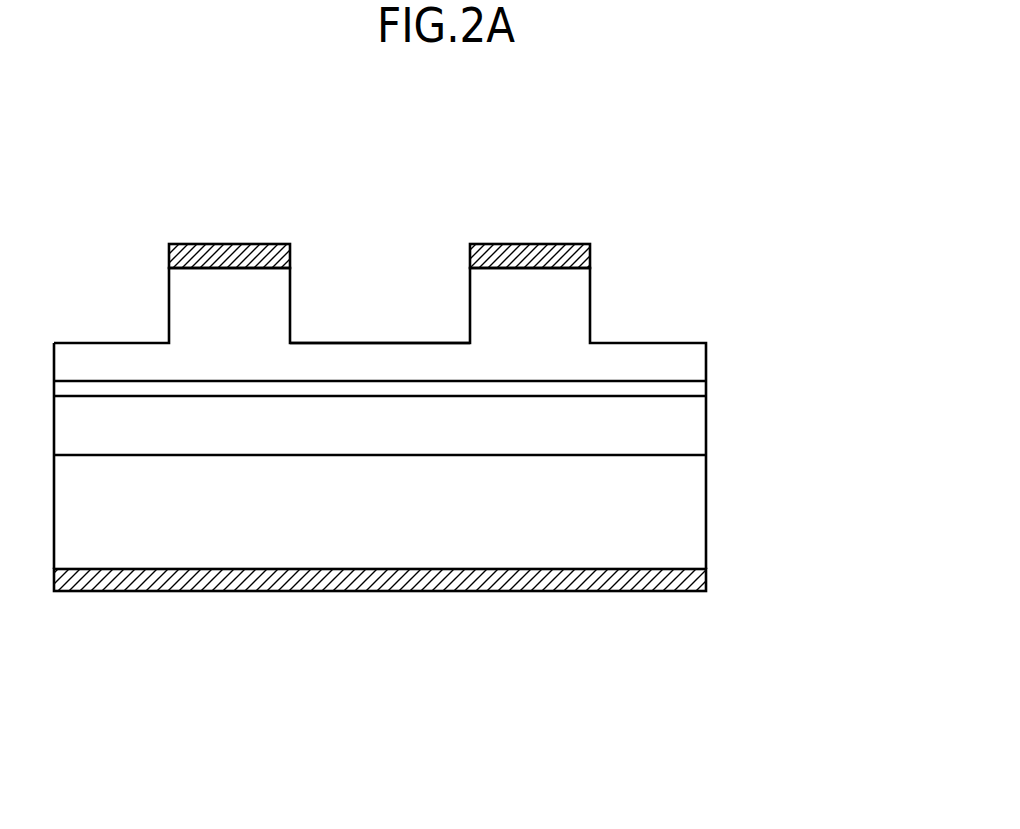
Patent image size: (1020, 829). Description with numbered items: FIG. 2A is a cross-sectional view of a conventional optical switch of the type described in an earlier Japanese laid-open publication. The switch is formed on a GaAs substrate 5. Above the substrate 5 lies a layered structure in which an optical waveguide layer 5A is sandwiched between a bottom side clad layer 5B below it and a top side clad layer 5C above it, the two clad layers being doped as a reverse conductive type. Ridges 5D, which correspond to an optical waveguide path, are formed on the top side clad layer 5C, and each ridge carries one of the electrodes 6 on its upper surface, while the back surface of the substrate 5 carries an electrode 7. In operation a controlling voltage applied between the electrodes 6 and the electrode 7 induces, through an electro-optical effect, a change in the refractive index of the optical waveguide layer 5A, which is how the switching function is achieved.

The GaAs substrate 5 is at (695, 510).
The optical waveguide layer 5A is at (695, 385).
The bottom side clad layer 5B is at (695, 422).
The top side clad layer 5C is at (660, 348).
The ridges 5D is at (278, 303).
The electrodes 6 is at (497, 245).
The electrode 7 is at (610, 587).